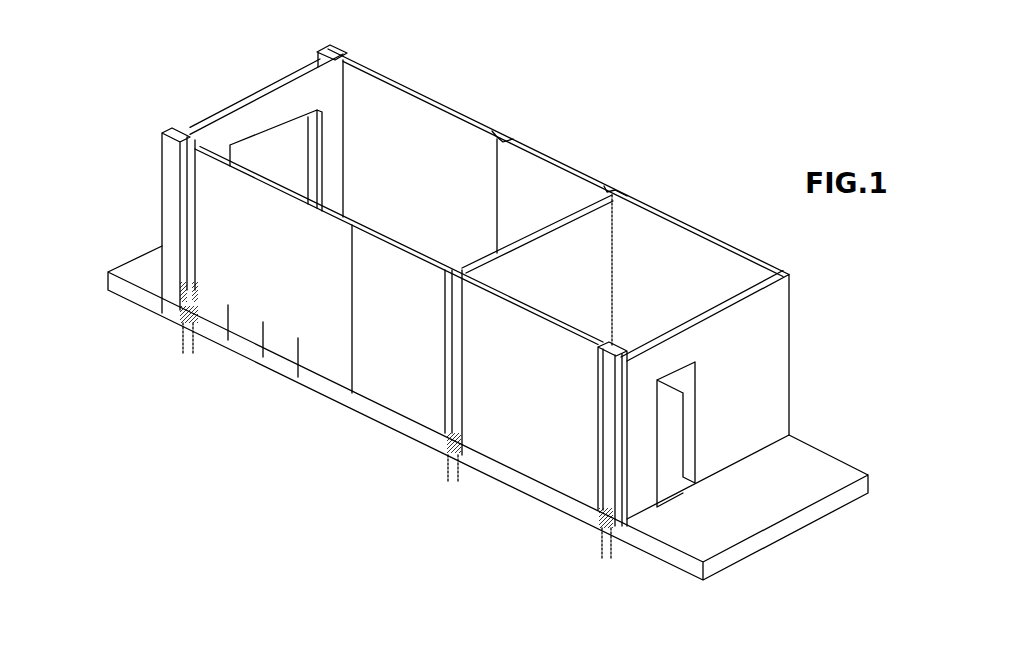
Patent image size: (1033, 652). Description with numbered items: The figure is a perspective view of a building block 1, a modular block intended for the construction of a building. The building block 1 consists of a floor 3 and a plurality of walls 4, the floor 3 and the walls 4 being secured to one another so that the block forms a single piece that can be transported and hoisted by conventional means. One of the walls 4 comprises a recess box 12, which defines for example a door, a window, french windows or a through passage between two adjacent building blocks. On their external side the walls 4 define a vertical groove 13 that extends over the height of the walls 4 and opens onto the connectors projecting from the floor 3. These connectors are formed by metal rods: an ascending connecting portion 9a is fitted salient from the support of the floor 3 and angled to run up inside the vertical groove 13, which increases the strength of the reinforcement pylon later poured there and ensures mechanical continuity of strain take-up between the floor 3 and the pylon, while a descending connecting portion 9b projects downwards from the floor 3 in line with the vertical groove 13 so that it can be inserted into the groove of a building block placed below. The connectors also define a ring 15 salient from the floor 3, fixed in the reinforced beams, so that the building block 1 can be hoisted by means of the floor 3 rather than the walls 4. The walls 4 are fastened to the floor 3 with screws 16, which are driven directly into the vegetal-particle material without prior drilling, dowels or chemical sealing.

The building block 1 is at (895, 349).
The floor 3 is at (790, 457).
The wall 4 is at (278, 118).
The ascending connecting portion 9a is at (182, 284).
The descending connecting portion 9b is at (183, 342).
The recess box 12 is at (320, 146).
The vertical groove 13 is at (166, 177).
The ring 15 is at (613, 518).
The screw 16 is at (262, 337).